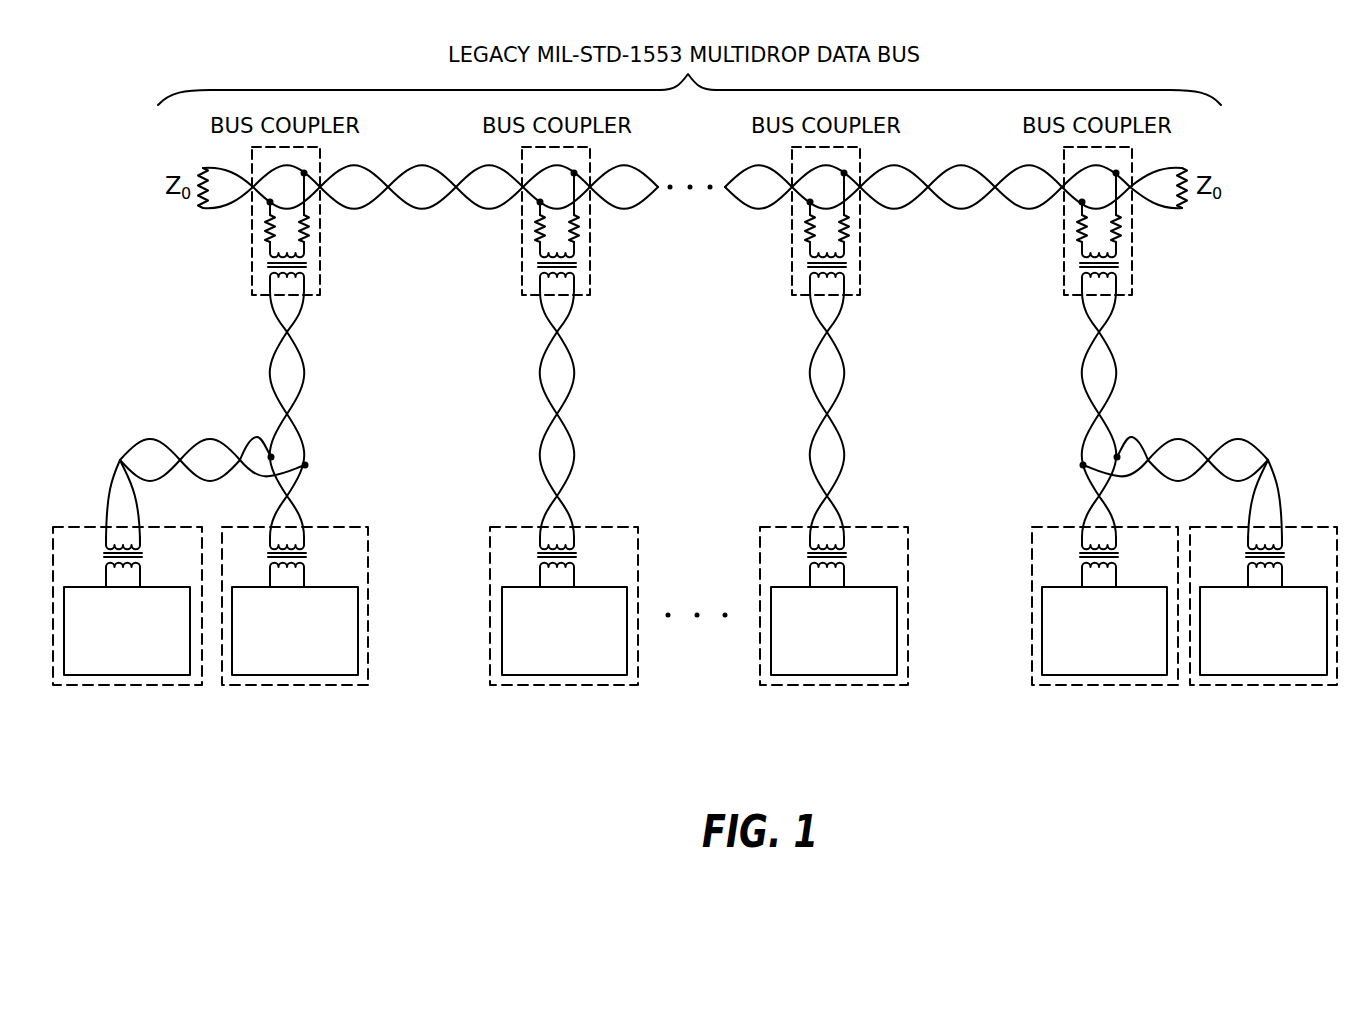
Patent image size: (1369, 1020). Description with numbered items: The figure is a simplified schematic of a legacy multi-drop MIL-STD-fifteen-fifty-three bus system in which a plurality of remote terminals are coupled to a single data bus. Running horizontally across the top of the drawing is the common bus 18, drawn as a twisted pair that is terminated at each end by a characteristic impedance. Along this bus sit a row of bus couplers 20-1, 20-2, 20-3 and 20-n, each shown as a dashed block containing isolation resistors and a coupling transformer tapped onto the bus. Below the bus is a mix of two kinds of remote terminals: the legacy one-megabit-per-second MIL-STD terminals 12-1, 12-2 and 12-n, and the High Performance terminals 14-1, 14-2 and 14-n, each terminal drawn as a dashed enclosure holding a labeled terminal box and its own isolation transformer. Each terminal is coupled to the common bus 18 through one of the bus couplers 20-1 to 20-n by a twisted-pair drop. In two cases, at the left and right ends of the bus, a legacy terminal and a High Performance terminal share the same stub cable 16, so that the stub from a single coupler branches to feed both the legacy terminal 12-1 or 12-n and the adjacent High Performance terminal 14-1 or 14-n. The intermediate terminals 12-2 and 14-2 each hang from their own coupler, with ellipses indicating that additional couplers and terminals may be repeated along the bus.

The 1553 bus 18 is at (440, 218).
The bus coupler 20-1 is at (250, 265).
The bus coupler 20-2 is at (522, 264).
The bus coupler 20-3 is at (792, 265).
The bus coupler 20-n is at (1063, 280).
The 1553 stub cable 16 is at (255, 424).
The 1 Mb/s MIL-STD-1553 terminal 12-1 is at (77, 686).
The 1 Mb/s MIL-STD-1553 terminal 12-2 is at (572, 688).
The 1 Mb/s MIL-STD-1553 terminal 12-n is at (1078, 688).
The High Performance 1553 terminal 14-1 is at (342, 686).
The High Performance 1553 terminal 14-2 is at (783, 688).
The High Performance 1553 terminal 14-n is at (1233, 688).